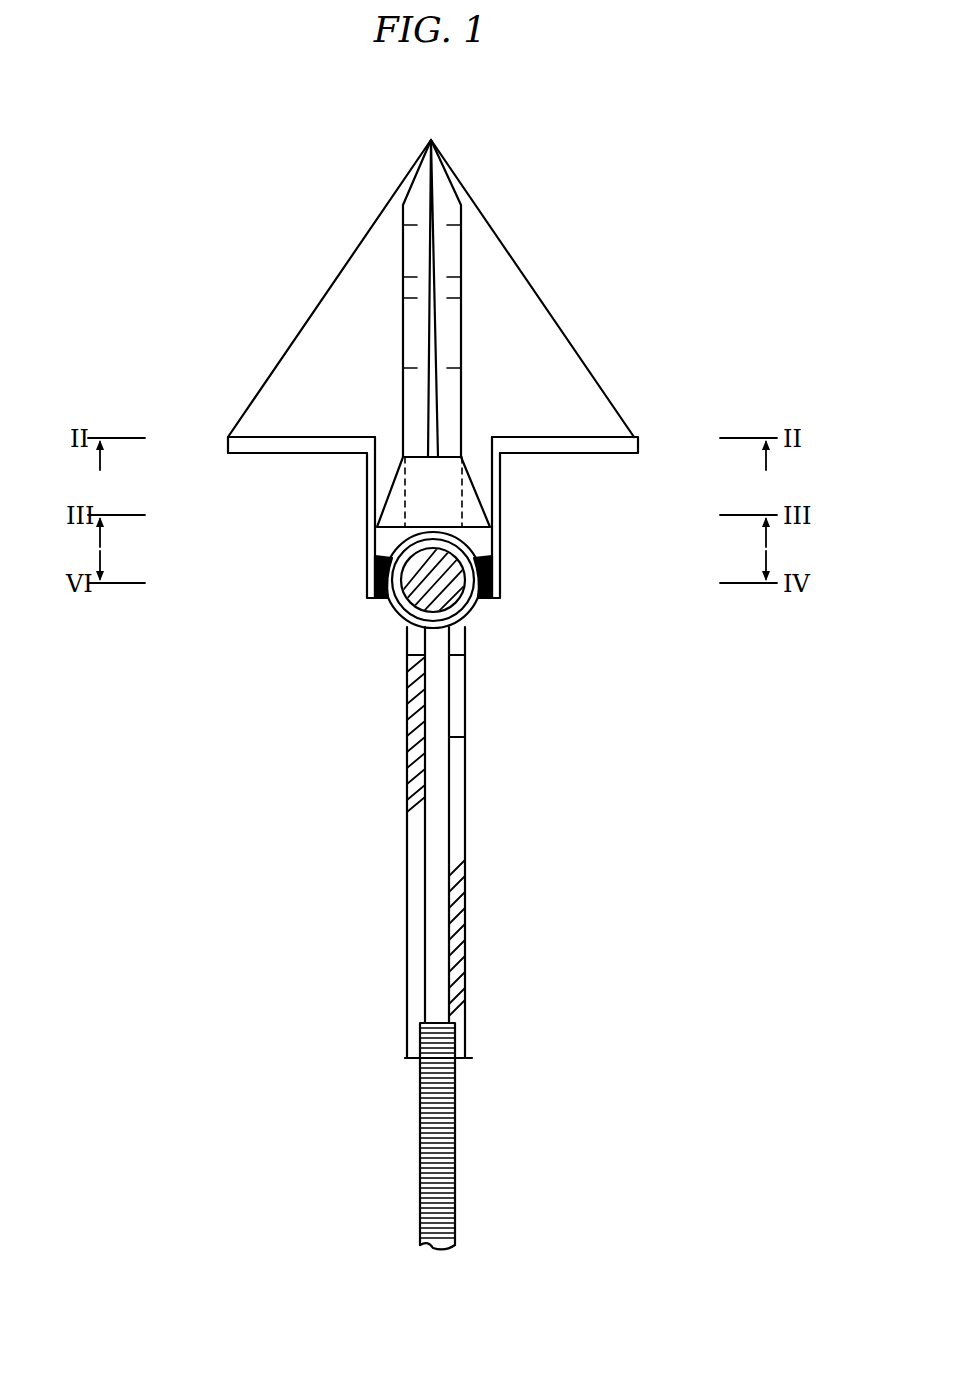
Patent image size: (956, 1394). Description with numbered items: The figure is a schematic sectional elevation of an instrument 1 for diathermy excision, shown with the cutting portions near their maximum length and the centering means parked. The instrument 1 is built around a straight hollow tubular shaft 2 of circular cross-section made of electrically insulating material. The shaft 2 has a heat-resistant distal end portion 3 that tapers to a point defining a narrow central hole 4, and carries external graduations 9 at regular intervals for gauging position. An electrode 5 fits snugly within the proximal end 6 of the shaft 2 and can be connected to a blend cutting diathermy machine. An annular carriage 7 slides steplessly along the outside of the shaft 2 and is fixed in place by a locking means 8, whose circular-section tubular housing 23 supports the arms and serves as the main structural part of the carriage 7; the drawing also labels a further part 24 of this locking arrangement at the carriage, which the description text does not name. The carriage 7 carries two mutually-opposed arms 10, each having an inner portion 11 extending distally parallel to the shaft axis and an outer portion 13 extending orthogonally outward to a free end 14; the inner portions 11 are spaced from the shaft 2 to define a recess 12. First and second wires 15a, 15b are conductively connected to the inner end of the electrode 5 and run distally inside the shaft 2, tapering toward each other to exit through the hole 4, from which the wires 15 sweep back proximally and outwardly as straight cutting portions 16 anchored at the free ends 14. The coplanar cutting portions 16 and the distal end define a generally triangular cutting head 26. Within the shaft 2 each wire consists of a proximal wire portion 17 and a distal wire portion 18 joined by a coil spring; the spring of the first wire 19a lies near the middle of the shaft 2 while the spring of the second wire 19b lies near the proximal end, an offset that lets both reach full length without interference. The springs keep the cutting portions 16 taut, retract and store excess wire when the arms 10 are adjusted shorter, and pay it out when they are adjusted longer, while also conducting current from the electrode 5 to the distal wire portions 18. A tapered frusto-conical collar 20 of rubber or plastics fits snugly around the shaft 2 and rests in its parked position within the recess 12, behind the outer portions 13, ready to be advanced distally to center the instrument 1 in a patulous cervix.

The instrument 1 is at (583, 128).
The tubular shaft 2 is at (465, 793).
The distal end portion 3 is at (462, 232).
The central hole 4 is at (432, 138).
The electrode 5 is at (425, 1211).
The proximal end 6 is at (408, 1040).
The annular carriage 7 is at (348, 518).
The locking means 8 is at (385, 600).
The graduations 9 is at (403, 372).
The arms 10 is at (368, 435).
The inner portion 11 is at (366, 487).
The recess 12 is at (473, 435).
The outer portion 13 is at (262, 455).
The free end 14 is at (228, 441).
The wires 15 is at (425, 848).
The first wire 15a is at (428, 278).
The second wire 15b is at (440, 278).
The cutting portions 16 is at (340, 283).
The proximal wire portions 17 is at (420, 982).
The distal wire portions 18 is at (418, 655).
The spring of the first wire 19a is at (415, 762).
The spring of the second wire 19b is at (455, 932).
The collar 20 is at (433, 492).
The tubular housing 23 is at (490, 582).
The pivot core 24 is at (372, 560).
The cutting head 26 is at (291, 419).